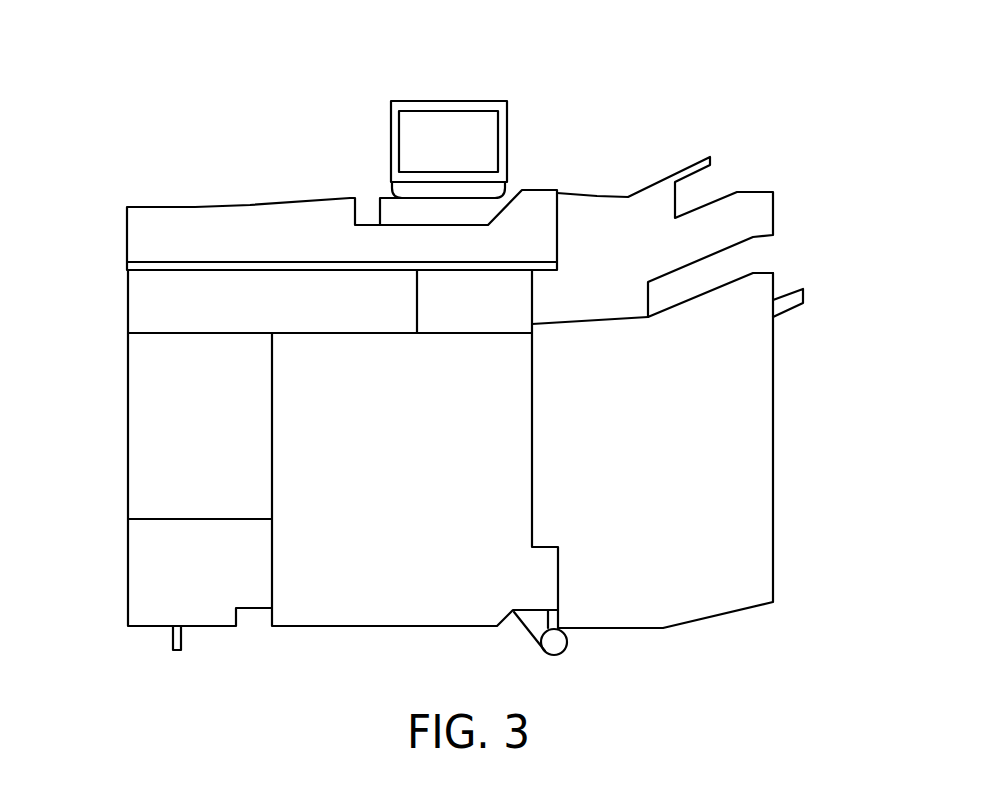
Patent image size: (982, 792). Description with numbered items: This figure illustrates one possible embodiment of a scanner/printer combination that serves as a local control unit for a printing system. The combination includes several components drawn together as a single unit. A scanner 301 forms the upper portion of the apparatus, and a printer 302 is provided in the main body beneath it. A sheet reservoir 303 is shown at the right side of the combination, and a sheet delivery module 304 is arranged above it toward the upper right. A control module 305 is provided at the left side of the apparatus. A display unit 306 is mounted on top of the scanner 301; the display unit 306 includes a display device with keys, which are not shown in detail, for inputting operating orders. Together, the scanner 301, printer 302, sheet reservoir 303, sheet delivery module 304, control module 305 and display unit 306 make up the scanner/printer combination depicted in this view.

The scanner 301 is at (207, 207).
The printer 302 is at (310, 626).
The sheet reservoir 303 is at (774, 448).
The sheet delivery module 304 is at (775, 222).
The control module 305 is at (127, 420).
The display unit 306 is at (508, 135).